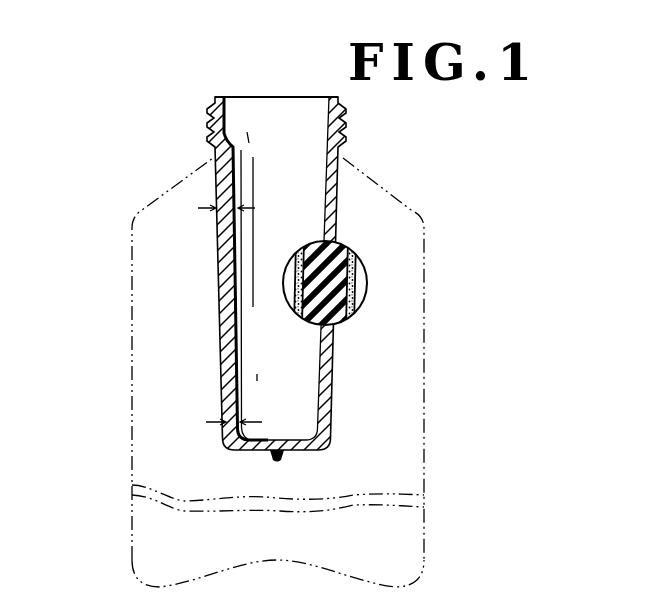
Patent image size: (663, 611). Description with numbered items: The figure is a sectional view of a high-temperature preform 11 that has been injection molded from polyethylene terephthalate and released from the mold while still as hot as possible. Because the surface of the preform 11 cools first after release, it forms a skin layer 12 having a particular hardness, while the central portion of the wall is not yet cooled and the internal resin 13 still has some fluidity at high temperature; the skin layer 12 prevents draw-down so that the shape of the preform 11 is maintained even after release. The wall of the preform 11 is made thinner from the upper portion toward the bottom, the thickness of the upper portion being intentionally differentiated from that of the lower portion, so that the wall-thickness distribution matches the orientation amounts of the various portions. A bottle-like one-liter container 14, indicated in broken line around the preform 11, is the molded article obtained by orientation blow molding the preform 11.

The preform 11 is at (215, 103).
The skin layer 12 is at (354, 298).
The internal resin 13 is at (338, 319).
The container 14 is at (132, 432).